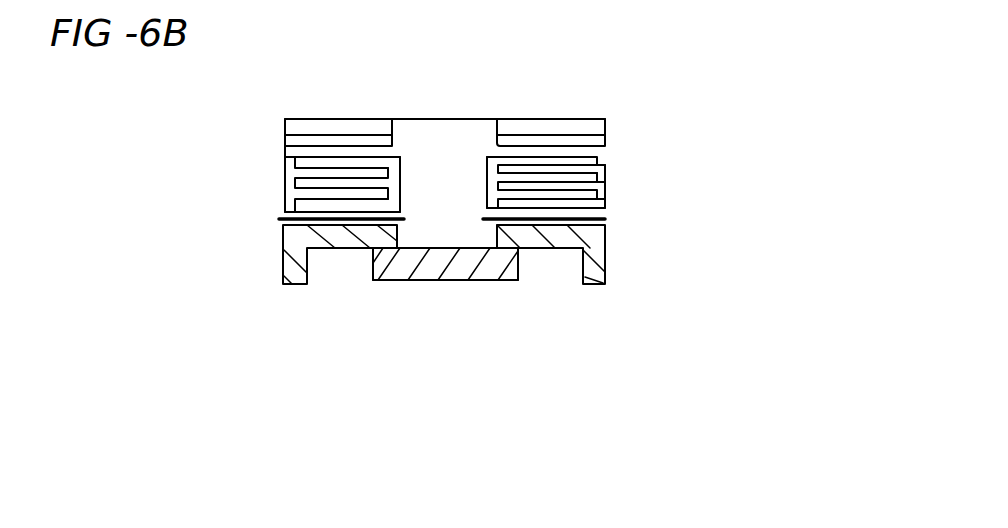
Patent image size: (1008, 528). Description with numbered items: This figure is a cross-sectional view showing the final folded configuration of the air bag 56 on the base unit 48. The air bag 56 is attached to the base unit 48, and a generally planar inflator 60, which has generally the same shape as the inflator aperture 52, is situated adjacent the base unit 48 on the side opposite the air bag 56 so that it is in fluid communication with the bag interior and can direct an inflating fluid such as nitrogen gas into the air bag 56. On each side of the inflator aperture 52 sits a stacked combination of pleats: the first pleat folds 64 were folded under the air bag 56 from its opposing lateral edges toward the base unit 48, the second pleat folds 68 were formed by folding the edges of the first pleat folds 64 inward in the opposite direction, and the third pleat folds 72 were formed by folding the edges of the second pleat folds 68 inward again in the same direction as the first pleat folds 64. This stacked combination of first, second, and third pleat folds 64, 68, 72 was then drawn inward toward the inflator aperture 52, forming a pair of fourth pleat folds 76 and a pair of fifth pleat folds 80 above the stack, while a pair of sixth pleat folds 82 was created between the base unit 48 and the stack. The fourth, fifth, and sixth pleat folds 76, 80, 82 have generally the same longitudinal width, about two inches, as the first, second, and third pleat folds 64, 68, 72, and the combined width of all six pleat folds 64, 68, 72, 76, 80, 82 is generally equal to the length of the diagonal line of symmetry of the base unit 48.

The base unit 48 is at (295, 265).
The inflator aperture 52 is at (436, 280).
The air bag 56 is at (482, 119).
The inflator 60 is at (503, 273).
The first pleat folds 64 is at (340, 207).
The second pleat folds 68 is at (287, 190).
The third pleat folds 72 is at (287, 172).
The fourth pleat folds 76 is at (285, 146).
The fifth pleat folds 80 is at (285, 120).
The sixth pleat folds 82 is at (280, 217).